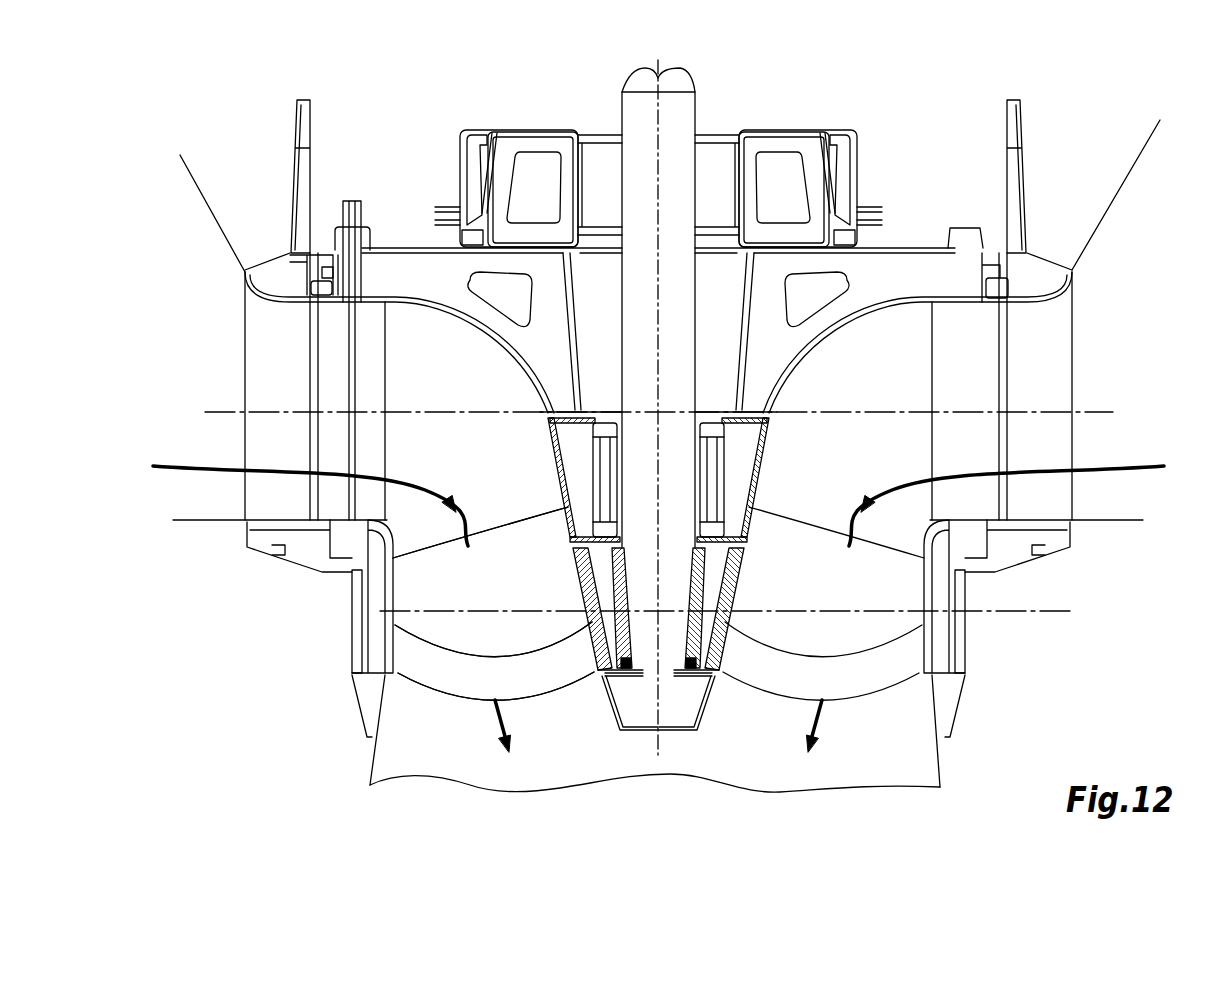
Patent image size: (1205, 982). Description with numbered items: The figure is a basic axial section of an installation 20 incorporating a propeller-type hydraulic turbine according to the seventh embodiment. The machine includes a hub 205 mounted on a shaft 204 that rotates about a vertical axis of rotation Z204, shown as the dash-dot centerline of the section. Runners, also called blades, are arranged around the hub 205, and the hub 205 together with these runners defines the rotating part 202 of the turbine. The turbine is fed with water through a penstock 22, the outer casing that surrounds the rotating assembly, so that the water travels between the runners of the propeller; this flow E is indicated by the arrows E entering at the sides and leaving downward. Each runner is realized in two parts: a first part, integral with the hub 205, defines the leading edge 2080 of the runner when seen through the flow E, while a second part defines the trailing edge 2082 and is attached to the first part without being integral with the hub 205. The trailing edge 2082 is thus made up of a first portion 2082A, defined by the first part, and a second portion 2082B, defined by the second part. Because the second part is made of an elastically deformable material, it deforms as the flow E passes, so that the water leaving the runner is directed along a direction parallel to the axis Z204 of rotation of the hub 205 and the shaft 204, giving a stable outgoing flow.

The turbine engine module 20 is at (818, 101).
The penstock 22 is at (262, 370).
The rotating part 202 is at (886, 592).
The shaft 204 is at (647, 113).
The axis of rotation Z204 is at (660, 394).
The hub 205 is at (638, 712).
The leading edge 2080 is at (505, 527).
The trailing edge 2082 is at (231, 626).
The first portion of the trailing edge 2082A is at (460, 600).
The second portion of the trailing edge 2082B is at (452, 673).
The flow E is at (658, 609).